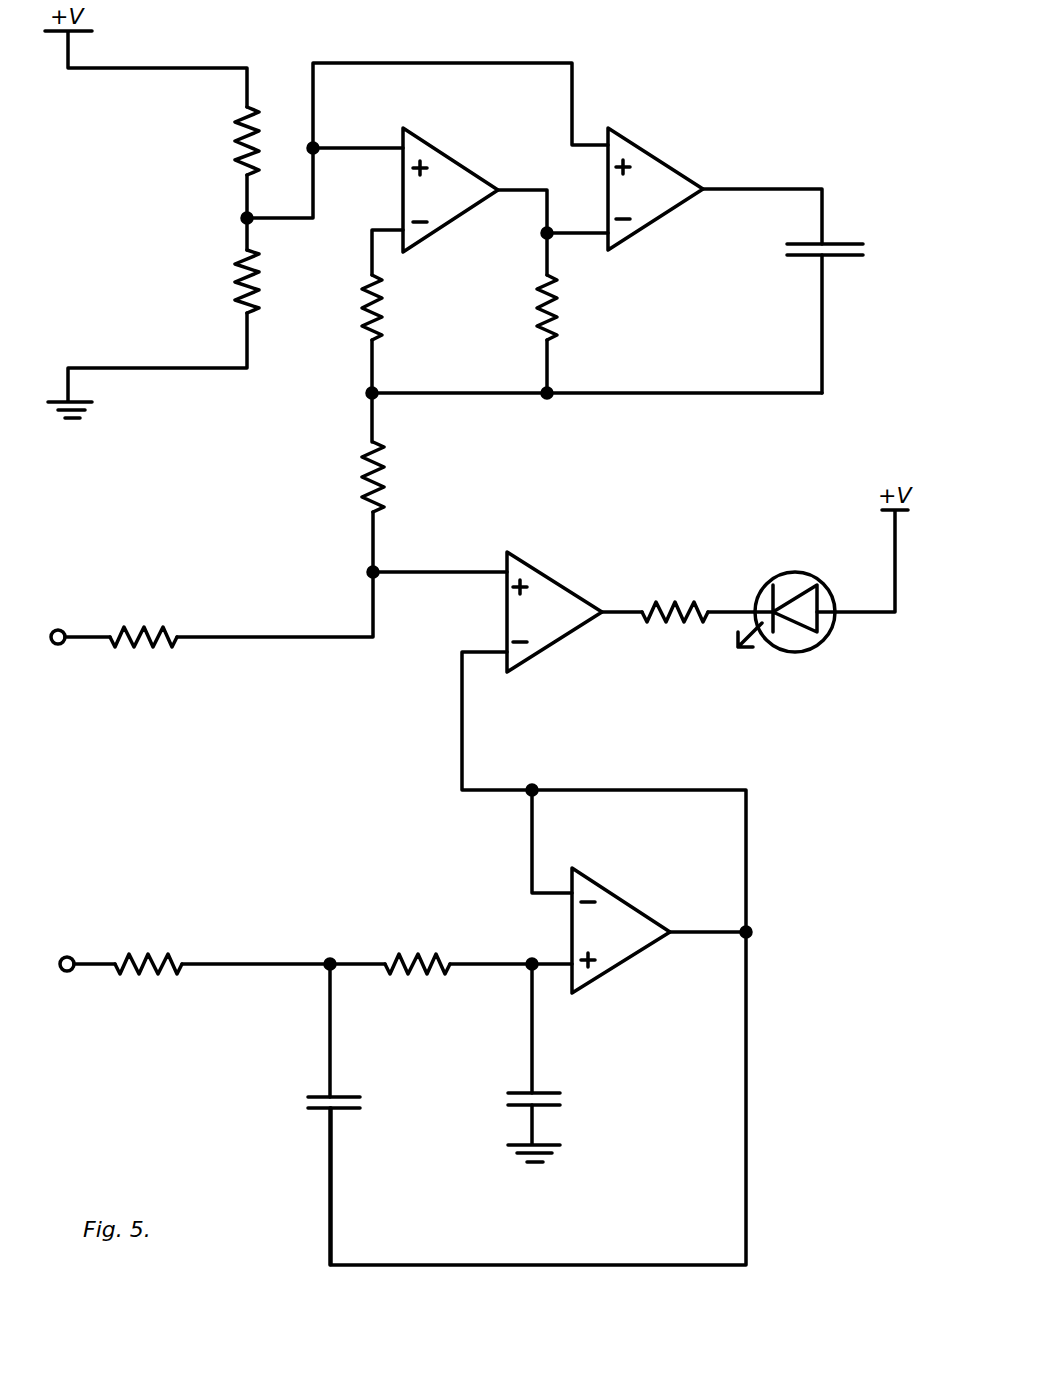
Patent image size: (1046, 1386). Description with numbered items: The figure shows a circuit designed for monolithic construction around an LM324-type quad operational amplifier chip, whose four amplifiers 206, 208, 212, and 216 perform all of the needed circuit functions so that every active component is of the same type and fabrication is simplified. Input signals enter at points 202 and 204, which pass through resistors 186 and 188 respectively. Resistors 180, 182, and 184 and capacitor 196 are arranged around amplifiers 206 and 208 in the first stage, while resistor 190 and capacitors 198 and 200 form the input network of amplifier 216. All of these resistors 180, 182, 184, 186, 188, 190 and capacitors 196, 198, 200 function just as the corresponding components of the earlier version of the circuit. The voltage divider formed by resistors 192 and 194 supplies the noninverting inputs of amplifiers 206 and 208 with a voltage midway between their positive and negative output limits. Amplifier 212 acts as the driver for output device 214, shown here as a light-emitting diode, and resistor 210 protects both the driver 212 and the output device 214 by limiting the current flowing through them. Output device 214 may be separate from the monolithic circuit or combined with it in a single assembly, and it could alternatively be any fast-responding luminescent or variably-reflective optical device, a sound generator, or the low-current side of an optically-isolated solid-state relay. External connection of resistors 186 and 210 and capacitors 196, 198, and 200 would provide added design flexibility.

The resistor 180 is at (382, 340).
The resistor 182 is at (557, 340).
The resistor 184 is at (362, 485).
The resistor 186 is at (137, 647).
The resistor 188 is at (172, 955).
The resistor 190 is at (388, 955).
The resistor 192 is at (235, 115).
The resistor 194 is at (235, 310).
The capacitor 196 is at (833, 242).
The capacitor 198 is at (308, 1097).
The capacitor 200 is at (553, 1102).
The point 202 is at (62, 630).
The point 204 is at (88, 937).
The amplifier 206 is at (443, 150).
The amplifier 208 is at (678, 172).
The resistor 210 is at (653, 602).
The driver 212 is at (555, 553).
The output device 214 is at (788, 568).
The amplifier 216 is at (652, 947).